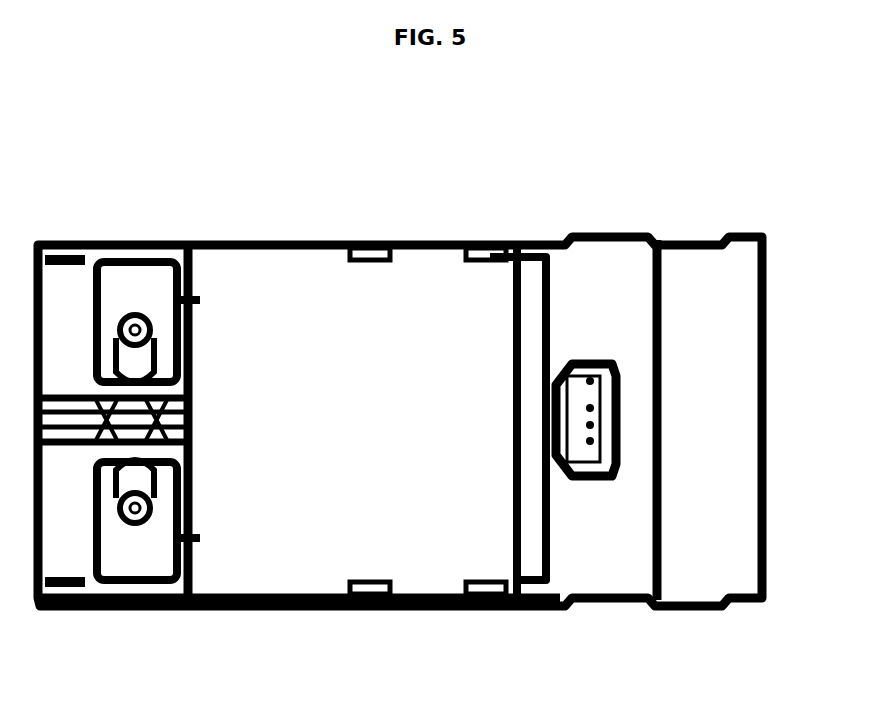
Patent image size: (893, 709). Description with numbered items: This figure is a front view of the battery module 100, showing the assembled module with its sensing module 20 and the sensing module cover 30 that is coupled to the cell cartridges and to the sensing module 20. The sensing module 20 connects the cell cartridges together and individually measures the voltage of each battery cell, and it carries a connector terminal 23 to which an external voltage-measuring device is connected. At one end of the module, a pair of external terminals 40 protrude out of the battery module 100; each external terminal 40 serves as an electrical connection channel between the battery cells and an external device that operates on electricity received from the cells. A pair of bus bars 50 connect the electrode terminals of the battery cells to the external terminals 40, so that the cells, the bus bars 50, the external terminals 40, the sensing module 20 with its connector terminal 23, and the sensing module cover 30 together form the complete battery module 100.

The battery module 100 is at (458, 156).
The sensing module 20 is at (680, 238).
The connector terminal 23 is at (618, 408).
The sensing module cover 30 is at (245, 602).
The external terminal 40 is at (137, 325).
The bus bar 50 is at (120, 285).